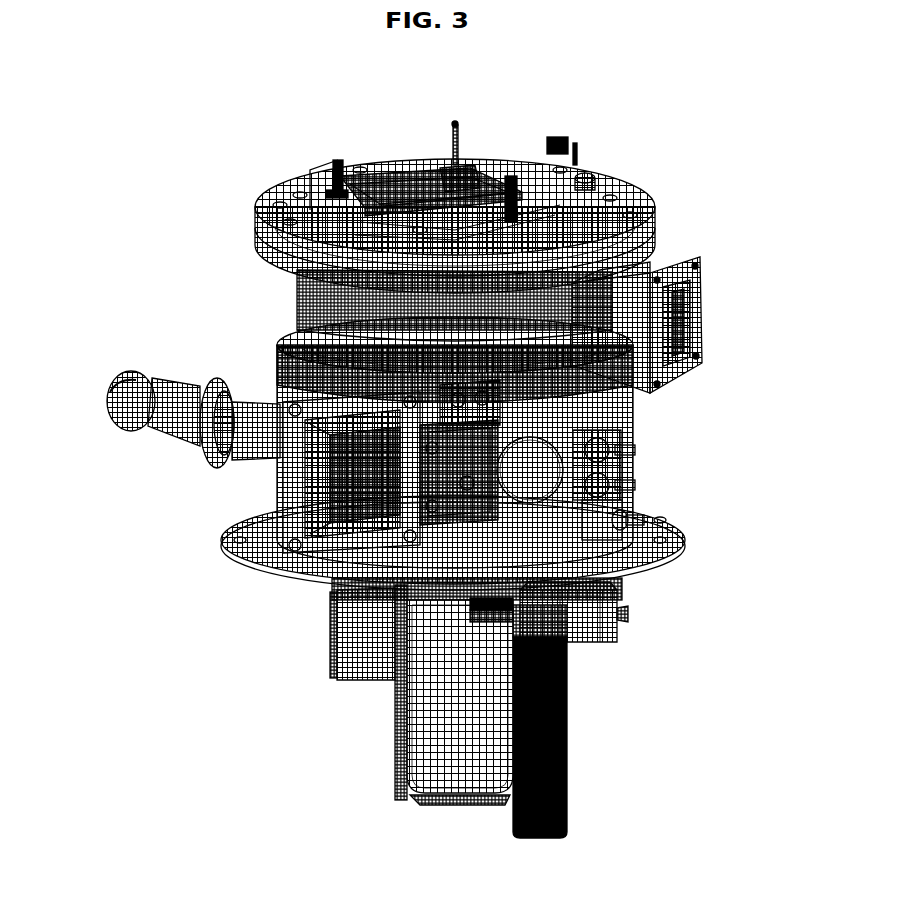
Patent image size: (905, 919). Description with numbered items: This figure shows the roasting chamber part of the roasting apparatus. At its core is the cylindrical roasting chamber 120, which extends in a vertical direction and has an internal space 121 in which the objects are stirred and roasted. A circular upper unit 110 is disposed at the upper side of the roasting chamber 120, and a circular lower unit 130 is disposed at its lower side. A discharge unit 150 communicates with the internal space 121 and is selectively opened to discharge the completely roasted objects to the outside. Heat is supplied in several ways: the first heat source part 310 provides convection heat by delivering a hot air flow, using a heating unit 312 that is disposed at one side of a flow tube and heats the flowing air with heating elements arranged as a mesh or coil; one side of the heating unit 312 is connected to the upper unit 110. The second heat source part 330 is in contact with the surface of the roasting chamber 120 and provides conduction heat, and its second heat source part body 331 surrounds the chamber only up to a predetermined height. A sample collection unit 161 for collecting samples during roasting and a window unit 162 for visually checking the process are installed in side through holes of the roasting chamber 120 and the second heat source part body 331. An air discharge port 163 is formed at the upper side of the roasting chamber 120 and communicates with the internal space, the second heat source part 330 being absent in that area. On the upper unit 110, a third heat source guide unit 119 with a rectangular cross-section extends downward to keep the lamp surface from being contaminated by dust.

The upper unit 110 is at (674, 250).
The third heat source guide unit 119 is at (298, 280).
The roasting chamber 120 is at (296, 292).
The internal space 121 is at (339, 160).
The lower unit 130 is at (688, 540).
The discharge unit 150 is at (434, 738).
The sample collection unit 161 is at (152, 432).
The window unit 162 is at (295, 530).
The air discharge port 163 is at (706, 315).
The first heat source part 310 is at (456, 160).
The heating unit 312 is at (480, 185).
The second heat source part 330 is at (628, 574).
The second heat source part body 331 is at (332, 612).